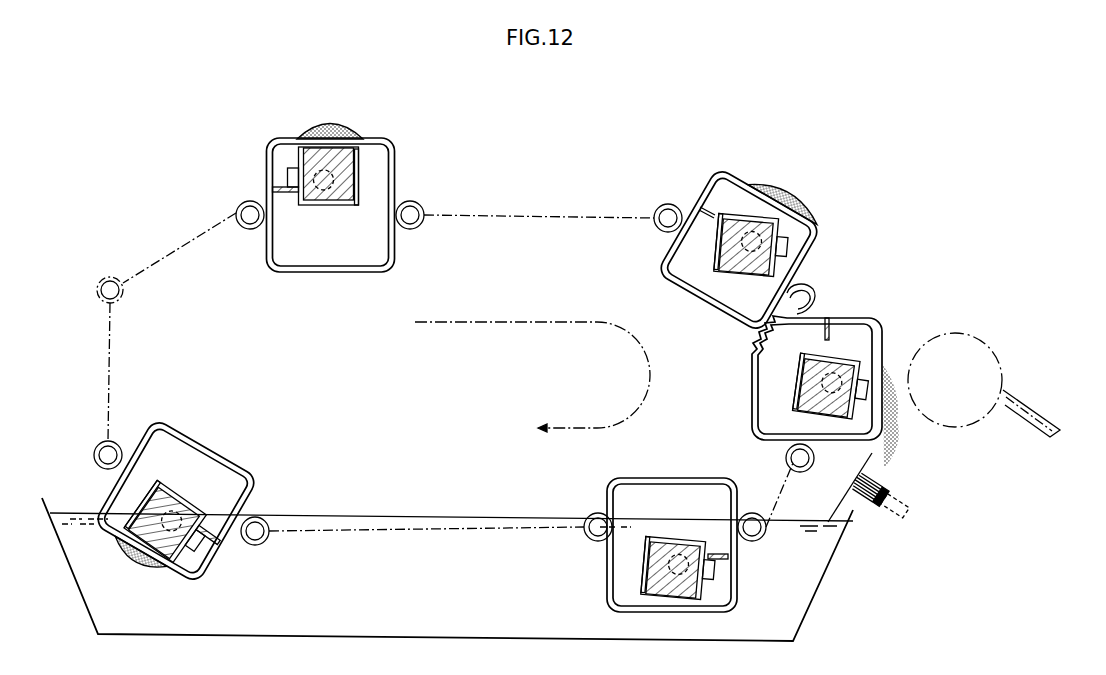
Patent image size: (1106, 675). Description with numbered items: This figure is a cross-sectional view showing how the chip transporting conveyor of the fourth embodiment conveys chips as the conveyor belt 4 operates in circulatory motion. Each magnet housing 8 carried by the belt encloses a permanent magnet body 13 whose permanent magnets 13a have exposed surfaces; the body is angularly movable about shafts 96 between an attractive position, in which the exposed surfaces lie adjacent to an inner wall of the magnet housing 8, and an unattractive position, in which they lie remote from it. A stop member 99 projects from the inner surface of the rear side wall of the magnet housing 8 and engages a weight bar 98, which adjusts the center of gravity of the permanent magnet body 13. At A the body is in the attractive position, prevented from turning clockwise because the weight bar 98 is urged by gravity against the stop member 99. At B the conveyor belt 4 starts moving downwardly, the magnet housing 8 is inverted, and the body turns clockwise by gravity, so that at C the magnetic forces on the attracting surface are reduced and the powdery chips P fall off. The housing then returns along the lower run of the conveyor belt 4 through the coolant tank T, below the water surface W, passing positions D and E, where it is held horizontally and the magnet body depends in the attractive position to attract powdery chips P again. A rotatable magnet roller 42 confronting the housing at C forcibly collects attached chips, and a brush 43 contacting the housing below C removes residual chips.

The conveyor belt 4 is at (540, 215).
The magnet housing 8 is at (393, 157).
The permanent magnet body 13 is at (337, 202).
The permanent magnets 13a is at (357, 203).
The rotatable magnet roller 42 is at (951, 333).
The brush 43 is at (897, 497).
The shafts 96 is at (318, 196).
The weight bar 98 is at (289, 170).
The stop member 99 is at (280, 195).
The attractive position A is at (366, 123).
The inversion position B is at (759, 164).
The chip discharging position C is at (893, 315).
The position D is at (638, 474).
The position E is at (255, 456).
The powdery chips P is at (330, 124).
The water surface W is at (471, 514).
The coolant tank T is at (427, 641).